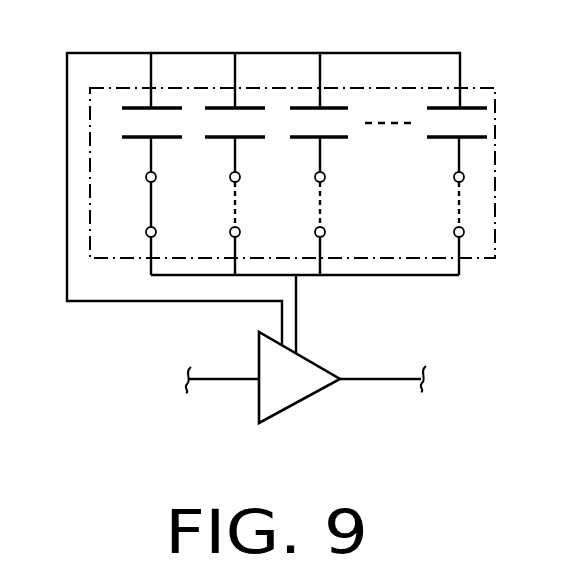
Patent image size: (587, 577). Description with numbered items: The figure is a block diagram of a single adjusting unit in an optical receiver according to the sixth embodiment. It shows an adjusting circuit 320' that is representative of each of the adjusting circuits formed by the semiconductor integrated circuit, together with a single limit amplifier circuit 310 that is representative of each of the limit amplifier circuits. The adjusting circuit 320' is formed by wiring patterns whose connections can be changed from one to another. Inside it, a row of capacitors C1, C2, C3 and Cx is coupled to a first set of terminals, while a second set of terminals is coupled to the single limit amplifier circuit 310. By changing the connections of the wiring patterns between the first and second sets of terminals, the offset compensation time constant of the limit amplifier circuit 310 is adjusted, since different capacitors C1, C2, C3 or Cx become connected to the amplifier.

The limit amplifier circuit 310 is at (300, 403).
The adjusting circuit 320' is at (294, 181).
The capacitor C1 is at (170, 108).
The capacitor C2 is at (256, 108).
The capacitor C3 is at (334, 108).
The capacitor Cx is at (470, 108).